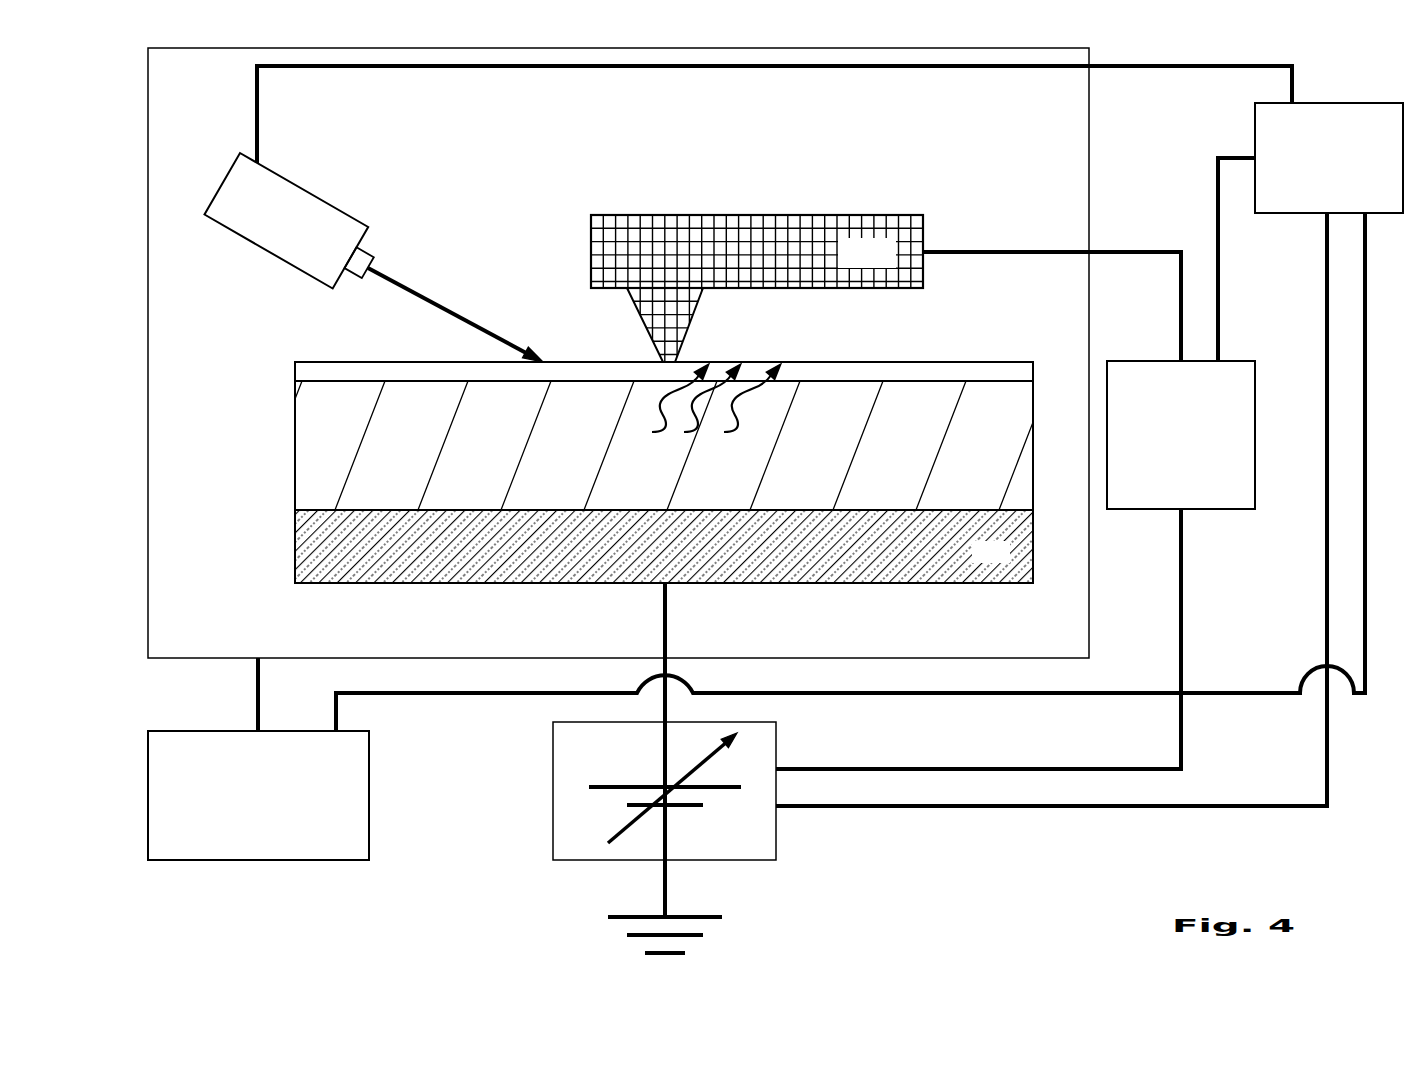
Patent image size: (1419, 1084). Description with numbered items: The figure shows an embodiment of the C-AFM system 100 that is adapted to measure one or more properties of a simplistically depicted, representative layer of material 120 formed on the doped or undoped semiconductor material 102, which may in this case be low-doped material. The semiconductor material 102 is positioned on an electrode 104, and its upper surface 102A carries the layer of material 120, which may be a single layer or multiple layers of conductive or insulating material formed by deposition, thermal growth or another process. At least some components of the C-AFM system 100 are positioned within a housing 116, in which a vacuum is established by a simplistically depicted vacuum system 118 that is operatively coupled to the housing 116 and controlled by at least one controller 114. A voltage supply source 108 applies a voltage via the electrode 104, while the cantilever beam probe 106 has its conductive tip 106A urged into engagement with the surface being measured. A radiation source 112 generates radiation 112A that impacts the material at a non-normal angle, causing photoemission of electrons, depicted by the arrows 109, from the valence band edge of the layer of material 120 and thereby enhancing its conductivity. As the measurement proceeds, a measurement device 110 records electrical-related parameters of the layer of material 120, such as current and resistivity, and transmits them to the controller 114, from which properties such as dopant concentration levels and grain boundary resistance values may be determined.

The C-AFM system 100 is at (92, 155).
The doped semiconductor material 102 is at (995, 486).
The upper surface 102A is at (921, 380).
The electrode 104 is at (1004, 564).
The cantilever beam probe 106 is at (882, 261).
The conductive tip 106A is at (650, 337).
The voltage supply source 108 is at (535, 737).
The arrows 109 is at (747, 420).
The measurement device 110 is at (1195, 445).
The radiation source 112 is at (291, 226).
The radiation 112A is at (432, 296).
The controller 114 is at (1338, 165).
The housing 116 is at (1089, 170).
The vacuum system 118 is at (269, 816).
The layer of material 120 is at (820, 371).